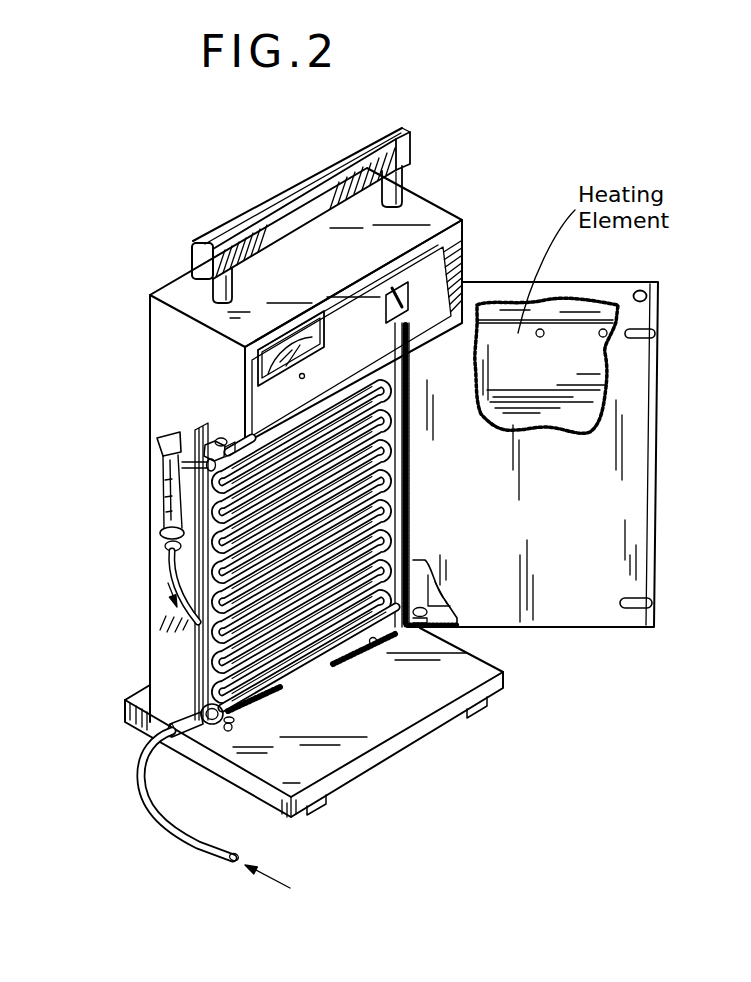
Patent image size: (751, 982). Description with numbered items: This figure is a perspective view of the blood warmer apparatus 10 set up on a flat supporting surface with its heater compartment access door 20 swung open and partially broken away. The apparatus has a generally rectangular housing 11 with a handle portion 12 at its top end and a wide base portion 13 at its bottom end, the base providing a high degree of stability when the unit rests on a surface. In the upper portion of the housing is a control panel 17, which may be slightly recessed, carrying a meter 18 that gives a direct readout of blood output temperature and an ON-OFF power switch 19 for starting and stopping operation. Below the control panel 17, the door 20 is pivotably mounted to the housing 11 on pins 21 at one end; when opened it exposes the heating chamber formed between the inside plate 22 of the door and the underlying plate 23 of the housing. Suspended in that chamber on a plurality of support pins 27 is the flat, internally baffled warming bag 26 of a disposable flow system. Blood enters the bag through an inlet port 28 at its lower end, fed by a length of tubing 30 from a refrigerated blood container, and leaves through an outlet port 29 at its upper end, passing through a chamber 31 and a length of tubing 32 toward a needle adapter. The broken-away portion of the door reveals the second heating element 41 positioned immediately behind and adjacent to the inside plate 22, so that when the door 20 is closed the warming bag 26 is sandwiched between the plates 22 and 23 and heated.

The blood warmer apparatus 10 is at (306, 421).
The housing 11 is at (418, 192).
The handle portion 12 is at (293, 198).
The base portion 13 is at (372, 738).
The control panel 17 is at (440, 255).
The meter 18 is at (250, 366).
The ON-OFF power switch 19 is at (438, 292).
The heater compartment access door 20 is at (573, 454).
The pins 21 is at (422, 628).
The inside wall or plate 22 is at (629, 390).
The underlying wall or plate 23 is at (220, 740).
The warming bag 26 is at (215, 622).
The support pins 27 is at (227, 432).
The inlet port 28 is at (210, 705).
The outlet port 29 is at (168, 452).
The tubing 30 is at (170, 833).
The chamber 31 is at (168, 510).
The tubing 32 is at (170, 567).
The second heating element 41 is at (575, 362).